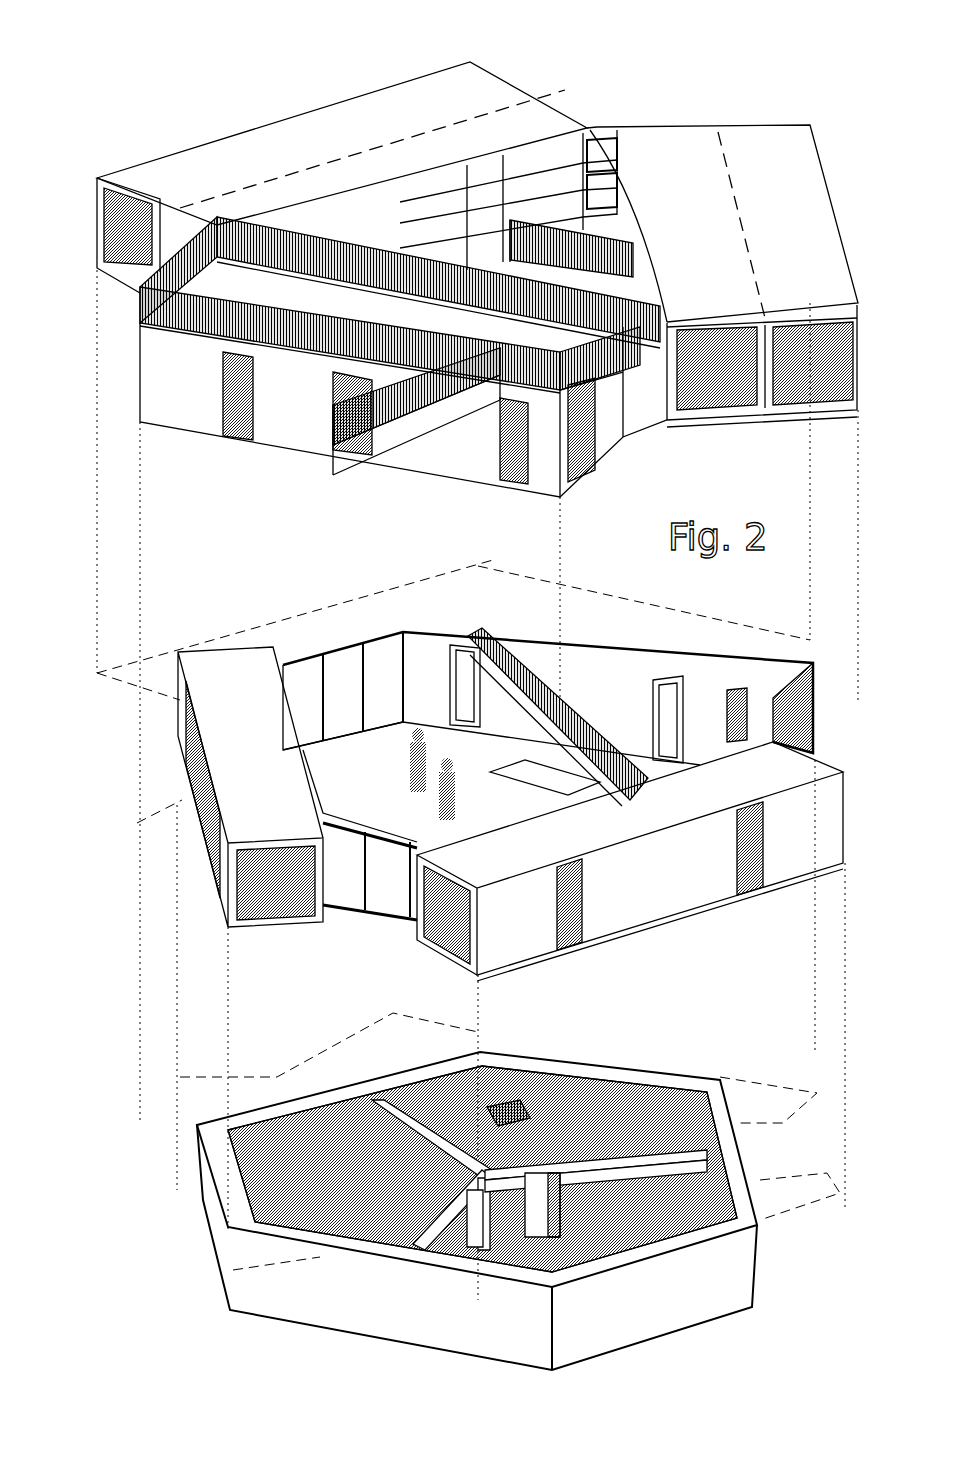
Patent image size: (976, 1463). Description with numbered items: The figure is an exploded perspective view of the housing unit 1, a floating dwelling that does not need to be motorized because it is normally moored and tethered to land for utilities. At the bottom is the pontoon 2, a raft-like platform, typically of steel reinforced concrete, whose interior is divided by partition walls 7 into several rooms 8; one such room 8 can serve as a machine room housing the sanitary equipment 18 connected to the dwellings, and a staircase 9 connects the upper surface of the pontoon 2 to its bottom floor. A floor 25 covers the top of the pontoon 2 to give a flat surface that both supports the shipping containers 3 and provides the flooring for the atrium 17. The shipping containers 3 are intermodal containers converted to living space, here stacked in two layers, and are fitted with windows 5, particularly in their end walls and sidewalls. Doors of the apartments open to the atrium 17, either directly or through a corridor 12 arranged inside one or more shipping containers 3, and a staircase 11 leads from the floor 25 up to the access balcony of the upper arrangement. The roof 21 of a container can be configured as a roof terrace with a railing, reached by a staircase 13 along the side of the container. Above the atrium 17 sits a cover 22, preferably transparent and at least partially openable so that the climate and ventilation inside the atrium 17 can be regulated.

The housing unit 1 is at (234, 68).
The pontoon 2 is at (487, 1199).
The shipping containers 3 is at (858, 325).
The windows 5 is at (125, 200).
The partition walls 7 is at (380, 1110).
The rooms 8 is at (310, 1197).
The staircase 9 is at (510, 1100).
The staircase 11 is at (525, 675).
The corridor 12 is at (340, 398).
The staircase 13 is at (380, 430).
The atrium 17 is at (418, 695).
The sanitary equipment 18 is at (388, 905).
The roof 21 is at (500, 95).
The cover 22 is at (597, 150).
The floor 25 is at (360, 770).